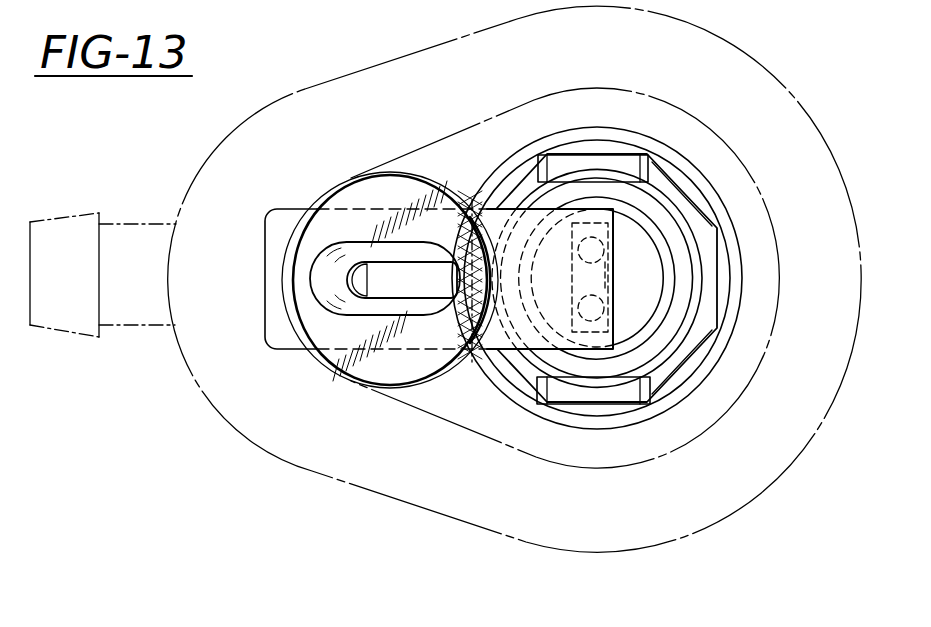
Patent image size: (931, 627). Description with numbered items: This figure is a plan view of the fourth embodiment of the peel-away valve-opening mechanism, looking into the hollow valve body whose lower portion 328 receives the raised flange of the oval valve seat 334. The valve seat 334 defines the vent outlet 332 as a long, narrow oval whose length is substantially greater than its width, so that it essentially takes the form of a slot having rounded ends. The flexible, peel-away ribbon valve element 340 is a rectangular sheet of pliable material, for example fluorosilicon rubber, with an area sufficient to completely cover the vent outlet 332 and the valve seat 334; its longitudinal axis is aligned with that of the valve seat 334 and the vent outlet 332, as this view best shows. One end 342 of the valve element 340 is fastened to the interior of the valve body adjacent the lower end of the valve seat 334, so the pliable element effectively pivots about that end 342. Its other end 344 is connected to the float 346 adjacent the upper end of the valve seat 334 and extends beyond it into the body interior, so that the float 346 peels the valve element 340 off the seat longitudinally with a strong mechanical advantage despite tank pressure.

The lower portion of the hollow valve body 328 is at (597, 128).
The vent outlet 332 is at (400, 275).
The oval valve seat 334 is at (377, 262).
The ribbon valve element 340 is at (432, 242).
The end of valve element 342 is at (280, 340).
The other end of valve element 344 is at (583, 349).
The float 346 is at (673, 172).